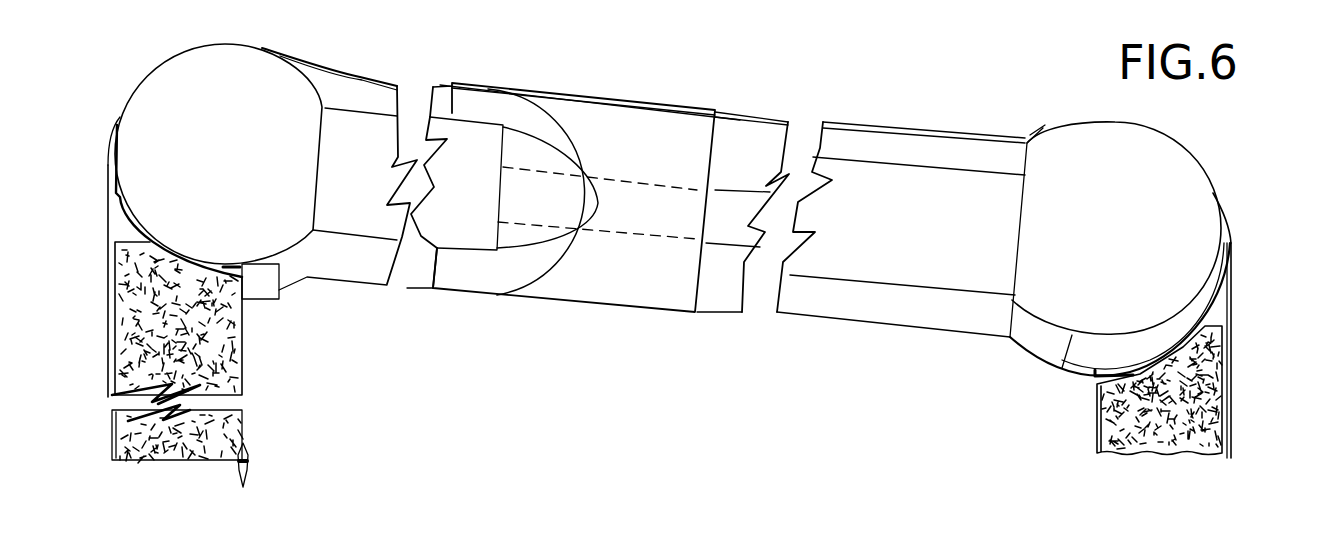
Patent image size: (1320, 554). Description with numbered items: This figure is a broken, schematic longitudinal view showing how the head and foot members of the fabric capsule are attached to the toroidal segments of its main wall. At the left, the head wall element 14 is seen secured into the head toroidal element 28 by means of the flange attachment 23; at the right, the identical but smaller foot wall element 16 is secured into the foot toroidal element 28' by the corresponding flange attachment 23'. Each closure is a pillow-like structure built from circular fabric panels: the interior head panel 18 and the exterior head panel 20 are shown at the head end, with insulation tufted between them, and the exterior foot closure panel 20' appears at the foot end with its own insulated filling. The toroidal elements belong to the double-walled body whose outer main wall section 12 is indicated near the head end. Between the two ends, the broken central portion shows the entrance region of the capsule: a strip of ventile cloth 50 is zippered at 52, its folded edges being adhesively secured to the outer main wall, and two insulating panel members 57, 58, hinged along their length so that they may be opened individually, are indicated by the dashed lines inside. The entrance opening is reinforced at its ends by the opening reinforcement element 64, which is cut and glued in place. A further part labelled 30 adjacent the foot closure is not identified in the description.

The outer main wall section 12 is at (117, 123).
The head wall element 14 is at (92, 300).
The foot wall element 16 is at (1243, 343).
The interior head panel 18 is at (243, 348).
The exterior head panel 20 is at (161, 367).
The exterior foot closure panel 20' is at (1198, 354).
The flange attachment 23 is at (284, 297).
The flange attachment 23' is at (1071, 380).
The toroidal element 28 is at (218, 147).
The toroidal element 28' is at (1140, 228).
The socket sleeve 30 is at (1197, 310).
The strip of ventile cloth 50 is at (873, 123).
The zipper 52 is at (690, 108).
The insulating panel member 57 is at (649, 212).
The insulating panel member 58 is at (725, 228).
The opening reinforcement element 64 is at (533, 113).